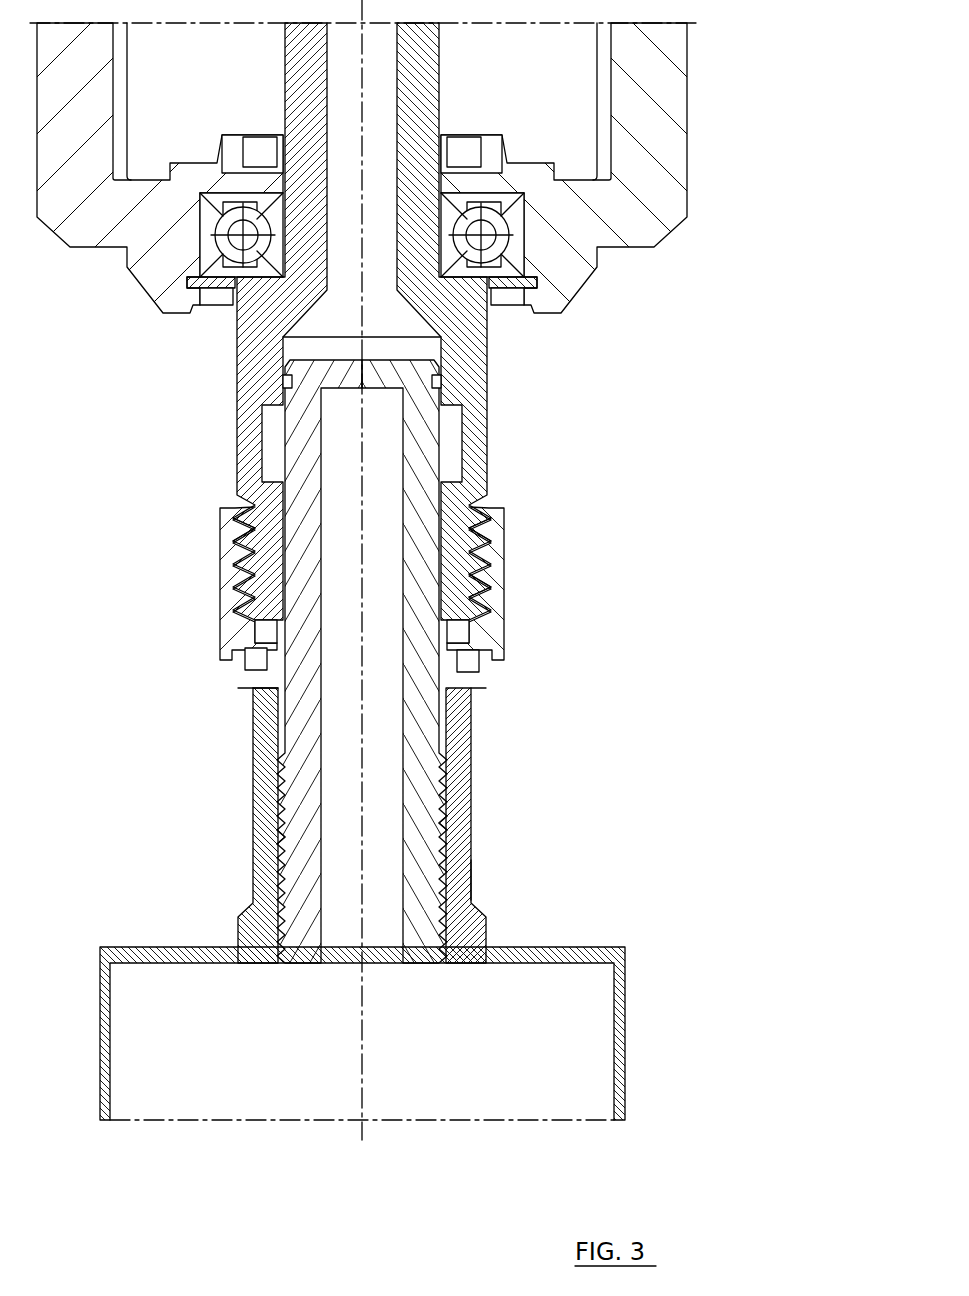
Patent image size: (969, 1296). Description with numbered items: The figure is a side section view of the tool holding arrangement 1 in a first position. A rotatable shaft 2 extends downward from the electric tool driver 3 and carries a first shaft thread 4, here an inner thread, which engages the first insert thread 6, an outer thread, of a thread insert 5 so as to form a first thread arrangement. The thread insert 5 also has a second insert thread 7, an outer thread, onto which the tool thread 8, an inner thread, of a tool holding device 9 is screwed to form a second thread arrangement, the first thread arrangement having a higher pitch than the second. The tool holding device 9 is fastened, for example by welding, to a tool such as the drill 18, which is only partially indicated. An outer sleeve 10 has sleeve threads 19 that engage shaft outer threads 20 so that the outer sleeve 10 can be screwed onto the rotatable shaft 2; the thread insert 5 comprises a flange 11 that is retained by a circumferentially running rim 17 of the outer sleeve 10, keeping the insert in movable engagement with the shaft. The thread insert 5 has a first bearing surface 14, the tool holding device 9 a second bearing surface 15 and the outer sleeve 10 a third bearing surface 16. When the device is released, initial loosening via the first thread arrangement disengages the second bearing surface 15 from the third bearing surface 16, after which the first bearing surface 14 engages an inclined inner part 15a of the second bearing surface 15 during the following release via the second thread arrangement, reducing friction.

The tool holding arrangement 1 is at (573, 483).
The rotatable shaft 2 is at (470, 323).
The electric tool driver 3 is at (628, 168).
The first shaft thread 4 is at (450, 553).
The thread insert 5 is at (300, 450).
The first insert thread 6 is at (458, 577).
The second insert thread 7 is at (432, 830).
The tool thread 8 is at (435, 847).
The tool holding device 9 is at (450, 877).
The outer sleeve 10 is at (492, 647).
The flange 11 is at (262, 660).
The first bearing surface 14 is at (447, 687).
The second bearing surface 15 is at (264, 686).
The inner part 15a is at (272, 692).
The third bearing surface 16 is at (478, 667).
The circumferentially running rim 17 is at (258, 682).
The drill 18 is at (538, 1030).
The sleeve threads 19 is at (483, 518).
The shaft outer threads 20 is at (483, 552).